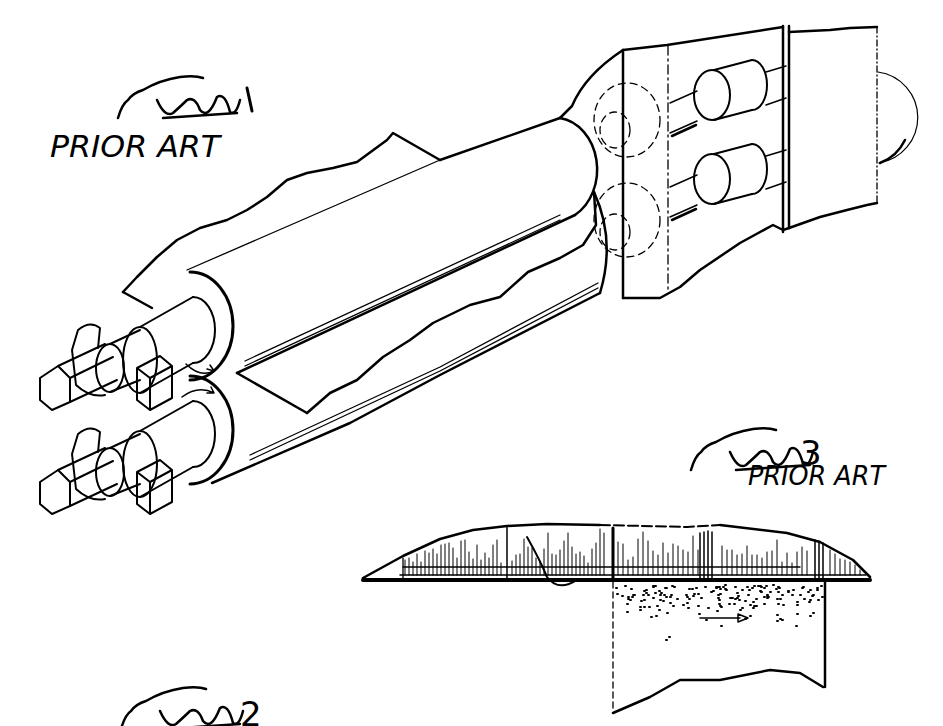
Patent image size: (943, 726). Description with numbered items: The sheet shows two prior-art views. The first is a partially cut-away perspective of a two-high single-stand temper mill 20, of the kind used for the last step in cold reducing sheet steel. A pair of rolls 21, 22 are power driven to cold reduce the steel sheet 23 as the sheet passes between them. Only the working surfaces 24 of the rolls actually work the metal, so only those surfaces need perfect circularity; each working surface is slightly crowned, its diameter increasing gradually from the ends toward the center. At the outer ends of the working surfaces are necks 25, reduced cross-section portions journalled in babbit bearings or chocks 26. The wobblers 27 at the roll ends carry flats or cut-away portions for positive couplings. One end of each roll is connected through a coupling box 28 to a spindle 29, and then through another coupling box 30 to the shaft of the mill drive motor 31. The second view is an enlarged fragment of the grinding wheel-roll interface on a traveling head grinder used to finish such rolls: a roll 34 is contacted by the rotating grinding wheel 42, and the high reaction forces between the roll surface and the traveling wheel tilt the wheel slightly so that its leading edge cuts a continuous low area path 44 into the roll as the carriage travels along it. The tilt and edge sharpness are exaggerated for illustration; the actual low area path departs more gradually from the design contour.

In FIG. 1, the two-high single-stand temper mill 20 is at (332, 449).
In FIG. 1, the roll 21 is at (475, 144).
In FIG. 1, the roll 22 is at (493, 358).
In FIG. 1, the steel sheet 23 is at (335, 179).
In FIG. 1, the working surface 24 is at (527, 147).
In FIG. 1, the neck 25 is at (130, 330).
In FIG. 1, the chock 26 is at (112, 400).
In FIG. 1, the wobbler 27 is at (70, 372).
In FIG. 1, the coupling box 28 is at (598, 68).
In FIG. 1, the spindle 29 is at (697, 200).
In FIG. 1, the coupling box 30 is at (750, 100).
In FIG. 1, the mill drive motor 31 is at (880, 106).
In FIG. 3, the roll 34 is at (487, 586).
In FIG. 3, the grinding wheel 42 is at (630, 634).
In FIG. 3, the low area path 44 is at (594, 530).